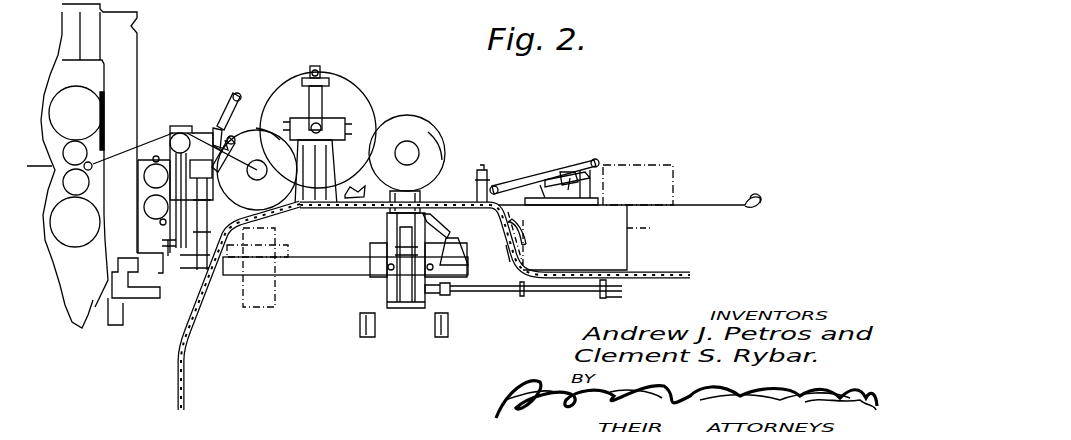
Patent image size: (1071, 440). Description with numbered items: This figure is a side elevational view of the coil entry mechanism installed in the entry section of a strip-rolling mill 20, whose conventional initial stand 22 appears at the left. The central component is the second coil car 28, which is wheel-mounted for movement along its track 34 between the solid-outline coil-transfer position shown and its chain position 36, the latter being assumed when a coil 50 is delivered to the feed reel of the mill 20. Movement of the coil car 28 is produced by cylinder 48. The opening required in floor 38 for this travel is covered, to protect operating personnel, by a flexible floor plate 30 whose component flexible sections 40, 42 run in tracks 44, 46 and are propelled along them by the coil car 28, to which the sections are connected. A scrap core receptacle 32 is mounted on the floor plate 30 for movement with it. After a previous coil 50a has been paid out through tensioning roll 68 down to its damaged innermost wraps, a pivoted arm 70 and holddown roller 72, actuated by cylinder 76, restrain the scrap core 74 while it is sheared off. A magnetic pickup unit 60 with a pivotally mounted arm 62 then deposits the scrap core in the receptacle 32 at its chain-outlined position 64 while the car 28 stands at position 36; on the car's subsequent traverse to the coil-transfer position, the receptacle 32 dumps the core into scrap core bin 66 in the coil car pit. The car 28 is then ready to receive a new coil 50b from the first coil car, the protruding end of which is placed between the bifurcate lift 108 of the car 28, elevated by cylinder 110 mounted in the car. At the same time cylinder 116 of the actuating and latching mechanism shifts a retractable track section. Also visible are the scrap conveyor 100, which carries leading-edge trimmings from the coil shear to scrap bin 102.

The strip-rolling mill 20 is at (512, 108).
The initial stand 22 is at (80, 292).
The second coil car 28 is at (392, 289).
The flexible floor plate 30 is at (508, 263).
The scrap core receptacle 32 is at (520, 236).
The track 34 is at (329, 275).
The chain position 36 is at (253, 312).
The floor 38 is at (748, 212).
The flexible section 40 is at (341, 212).
The flexible section 42 is at (567, 237).
The track 44 is at (178, 380).
The track 46 is at (680, 275).
The cylinder 48 is at (558, 290).
The coil 50 is at (407, 115).
The coil 50a is at (256, 128).
The new coil 50b is at (428, 132).
The magnetic pickup unit 60 is at (326, 160).
The pivotally mounted arm 62 is at (318, 96).
The chain-outlined position 64 is at (356, 186).
The scrap core bin 66 is at (650, 229).
The tensioning roll 68 is at (182, 133).
The pivoted arm 70 is at (233, 93).
The holddown roller 72 is at (240, 100).
The scrap core 74 is at (257, 170).
The cylinder 76 is at (215, 175).
The scrap conveyor 100 is at (537, 175).
The scrap bin 102 is at (641, 160).
The bifurcate lift 108 is at (443, 192).
The cylinder 110 is at (428, 292).
The cylinder 116 is at (430, 228).